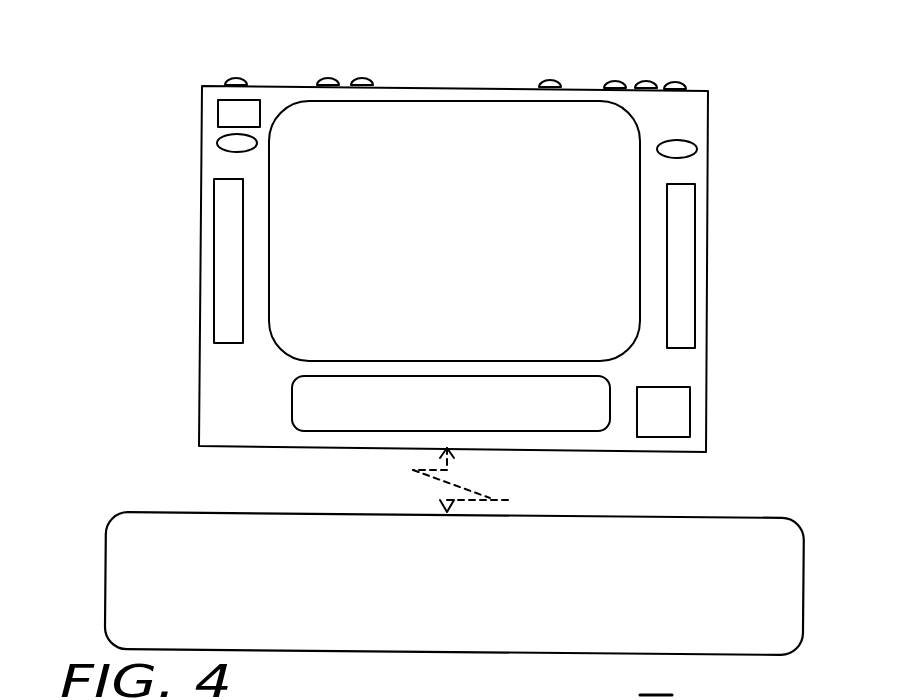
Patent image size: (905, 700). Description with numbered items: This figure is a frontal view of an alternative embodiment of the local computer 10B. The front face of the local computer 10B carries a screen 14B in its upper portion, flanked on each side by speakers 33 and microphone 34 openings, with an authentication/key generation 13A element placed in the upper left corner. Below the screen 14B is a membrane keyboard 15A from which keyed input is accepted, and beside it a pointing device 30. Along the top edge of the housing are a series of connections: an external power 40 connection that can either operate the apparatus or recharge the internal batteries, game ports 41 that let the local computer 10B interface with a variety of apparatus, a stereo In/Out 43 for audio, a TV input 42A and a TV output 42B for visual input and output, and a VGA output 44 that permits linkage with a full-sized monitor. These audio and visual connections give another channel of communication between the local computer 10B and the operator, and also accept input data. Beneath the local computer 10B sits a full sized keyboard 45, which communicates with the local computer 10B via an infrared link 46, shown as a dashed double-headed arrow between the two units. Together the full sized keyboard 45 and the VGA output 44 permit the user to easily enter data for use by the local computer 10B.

The local computer 10B is at (213, 387).
The authentication/key generation 13A is at (235, 113).
The screen 14B is at (485, 207).
The membrane keyboard 15A is at (492, 415).
The pointing device 30 is at (672, 422).
The speakers 33 is at (227, 208).
The microphone 34 is at (228, 143).
The external power 40 is at (236, 80).
The game ports 41 is at (328, 80).
The TV input 42A is at (615, 82).
The TV output 42B is at (646, 82).
The stereo In/Out 43 is at (550, 82).
The VGA output 44 is at (675, 84).
The full sized keyboard 45 is at (472, 591).
The infrared link 46 is at (483, 493).